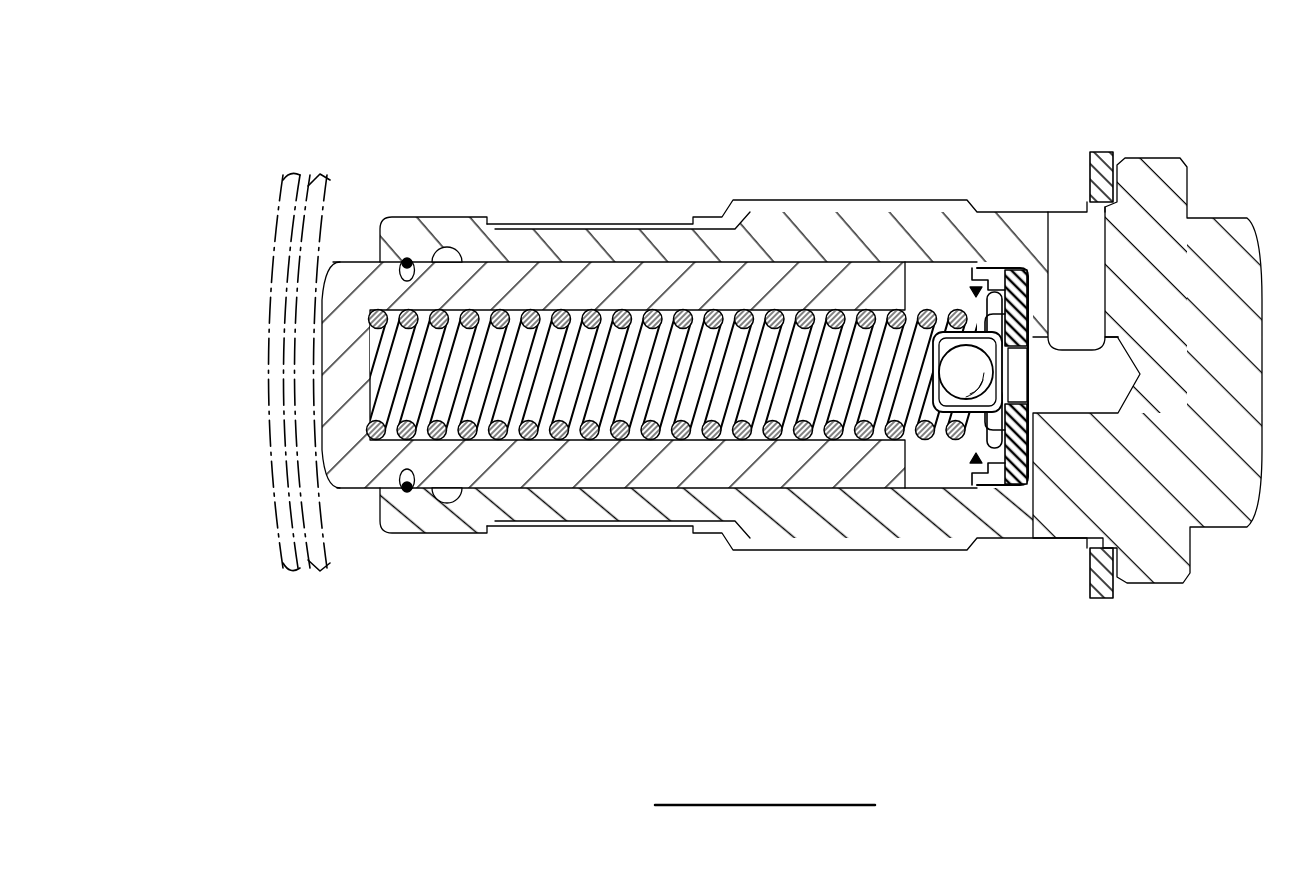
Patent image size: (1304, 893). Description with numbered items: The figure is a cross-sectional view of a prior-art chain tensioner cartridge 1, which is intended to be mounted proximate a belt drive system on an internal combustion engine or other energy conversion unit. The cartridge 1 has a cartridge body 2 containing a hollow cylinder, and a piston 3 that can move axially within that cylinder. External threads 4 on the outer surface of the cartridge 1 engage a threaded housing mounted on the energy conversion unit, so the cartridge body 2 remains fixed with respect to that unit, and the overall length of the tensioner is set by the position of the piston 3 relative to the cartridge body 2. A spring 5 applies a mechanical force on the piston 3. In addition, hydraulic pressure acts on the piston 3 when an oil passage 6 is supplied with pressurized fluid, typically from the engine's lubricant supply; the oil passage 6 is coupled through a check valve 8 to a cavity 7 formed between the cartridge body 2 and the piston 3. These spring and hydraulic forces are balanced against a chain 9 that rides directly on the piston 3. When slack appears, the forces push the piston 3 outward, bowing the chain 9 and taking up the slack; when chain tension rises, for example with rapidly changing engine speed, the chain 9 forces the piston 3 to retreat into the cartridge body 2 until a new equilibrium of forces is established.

The chain tensioner cartridge 1 is at (892, 110).
The cartridge body 2 is at (848, 517).
The piston 3 is at (352, 477).
The external threads 4 is at (753, 201).
The spring 5 is at (567, 343).
The oil passage 6 is at (1077, 227).
The cavity 7 is at (952, 283).
The check valve 8 is at (958, 395).
The chain 9 is at (278, 418).